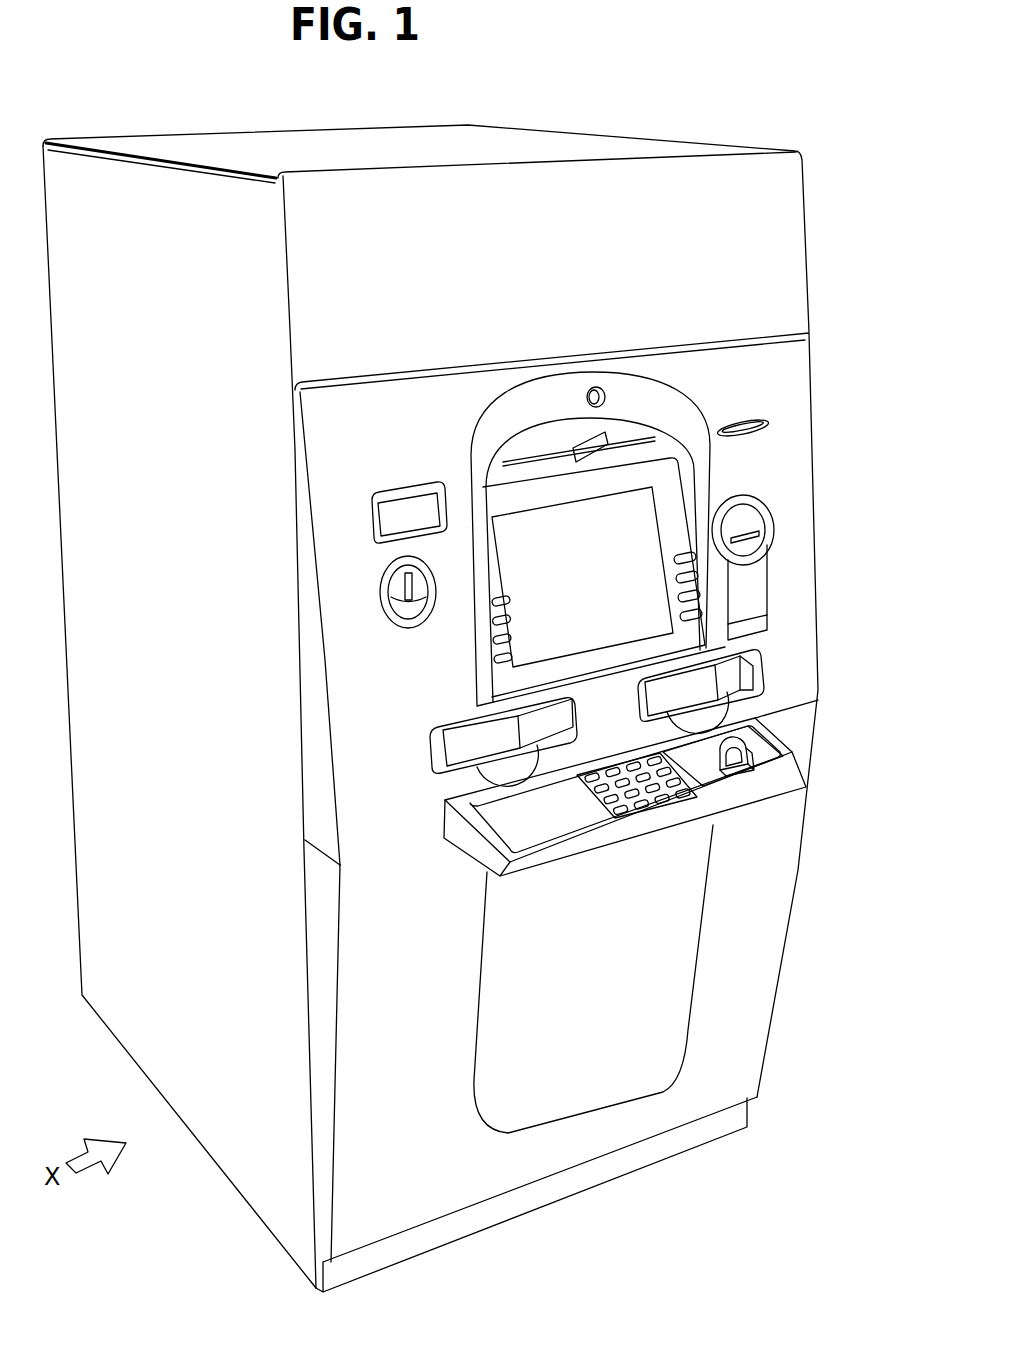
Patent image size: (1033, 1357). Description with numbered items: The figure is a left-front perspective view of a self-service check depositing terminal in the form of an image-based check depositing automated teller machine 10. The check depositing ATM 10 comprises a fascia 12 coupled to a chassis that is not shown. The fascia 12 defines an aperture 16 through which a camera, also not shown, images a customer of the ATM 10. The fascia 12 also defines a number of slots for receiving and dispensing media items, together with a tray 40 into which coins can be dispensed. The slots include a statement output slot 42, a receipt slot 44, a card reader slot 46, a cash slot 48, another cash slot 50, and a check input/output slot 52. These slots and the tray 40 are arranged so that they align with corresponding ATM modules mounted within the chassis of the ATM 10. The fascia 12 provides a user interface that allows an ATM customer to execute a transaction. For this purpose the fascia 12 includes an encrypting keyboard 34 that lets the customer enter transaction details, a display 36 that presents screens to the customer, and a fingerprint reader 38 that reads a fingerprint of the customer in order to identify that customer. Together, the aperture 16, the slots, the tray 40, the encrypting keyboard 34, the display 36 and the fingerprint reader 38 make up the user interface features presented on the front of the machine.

The image-based check depositing automated teller machine 10 is at (634, 101).
The fascia 12 is at (298, 452).
The aperture 16 is at (600, 390).
The encrypting keyboard 34 is at (707, 792).
The display 36 is at (660, 488).
The fingerprint reader 38 is at (765, 758).
The tray 40 is at (395, 593).
The statement output slot 42 is at (628, 440).
The receipt slot 44 is at (760, 420).
The card reader slot 46 is at (752, 537).
The cash slot 48 is at (447, 743).
The cash slot 50 is at (763, 675).
The check input/output slot 52 is at (372, 517).